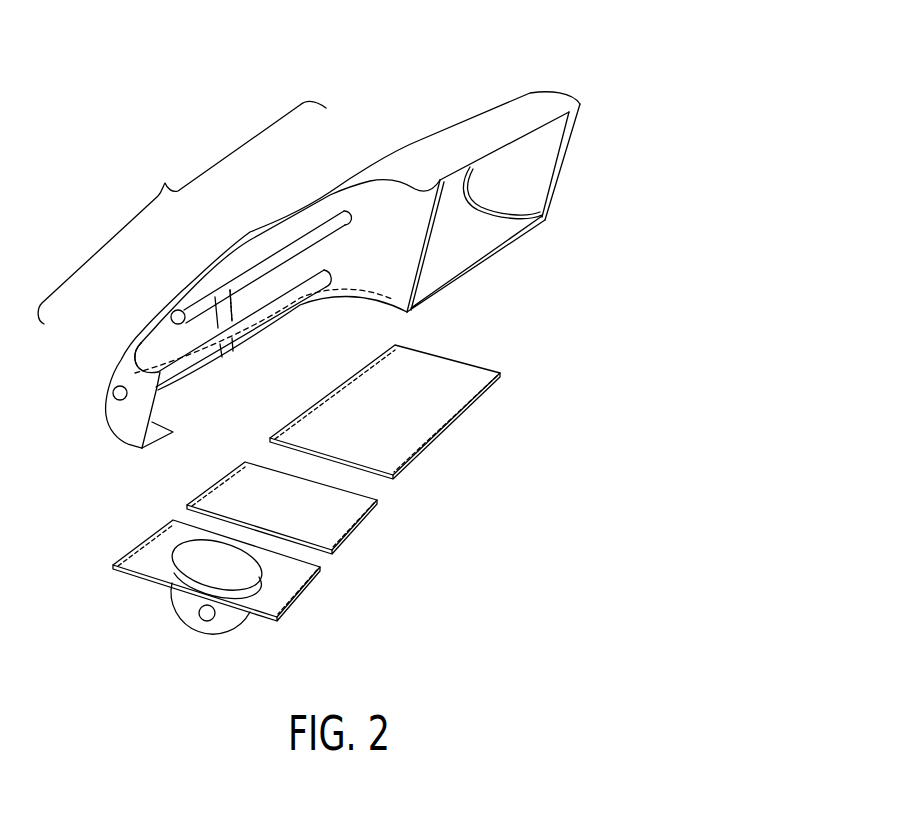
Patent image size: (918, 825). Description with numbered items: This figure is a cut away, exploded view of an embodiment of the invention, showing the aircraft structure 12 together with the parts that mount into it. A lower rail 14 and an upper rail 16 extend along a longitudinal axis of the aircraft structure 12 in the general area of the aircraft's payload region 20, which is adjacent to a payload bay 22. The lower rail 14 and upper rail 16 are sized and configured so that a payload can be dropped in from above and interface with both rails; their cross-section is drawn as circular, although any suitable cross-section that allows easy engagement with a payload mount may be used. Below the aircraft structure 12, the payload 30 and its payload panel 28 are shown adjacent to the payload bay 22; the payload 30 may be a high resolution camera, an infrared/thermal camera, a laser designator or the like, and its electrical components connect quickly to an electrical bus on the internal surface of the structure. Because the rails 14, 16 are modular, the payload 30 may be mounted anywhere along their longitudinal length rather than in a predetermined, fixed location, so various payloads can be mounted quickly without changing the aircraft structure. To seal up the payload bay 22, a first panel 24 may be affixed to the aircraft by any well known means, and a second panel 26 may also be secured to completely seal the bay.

The aircraft structure 12 is at (529, 91).
The lower rail 14 is at (155, 355).
The upper rail 16 is at (268, 249).
The payload region 20 is at (182, 213).
The payload bay 22 is at (229, 370).
The first panel 24 is at (400, 417).
The second panel 26 is at (340, 540).
The payload panel 28 is at (261, 614).
The payload 30 is at (203, 621).